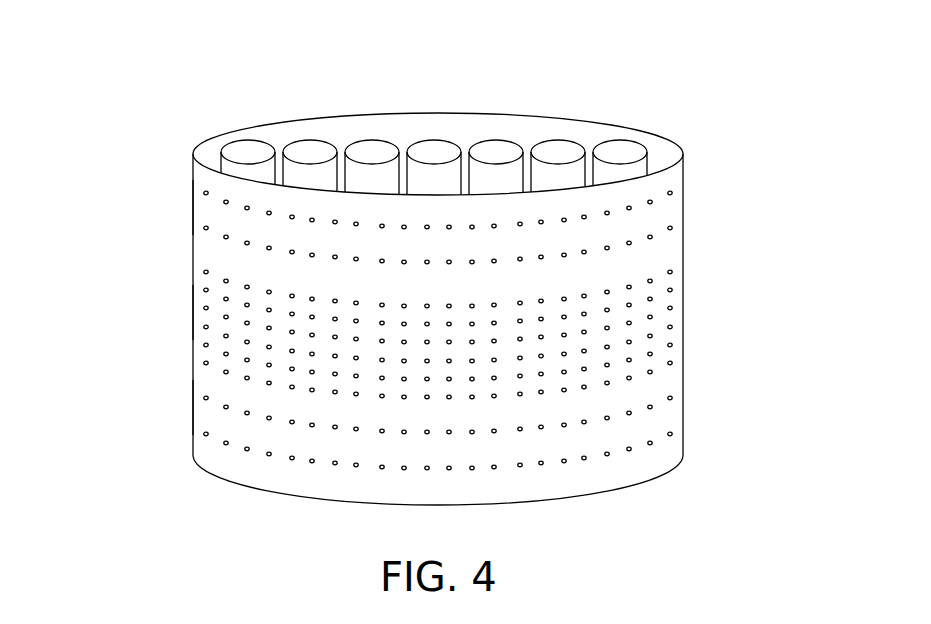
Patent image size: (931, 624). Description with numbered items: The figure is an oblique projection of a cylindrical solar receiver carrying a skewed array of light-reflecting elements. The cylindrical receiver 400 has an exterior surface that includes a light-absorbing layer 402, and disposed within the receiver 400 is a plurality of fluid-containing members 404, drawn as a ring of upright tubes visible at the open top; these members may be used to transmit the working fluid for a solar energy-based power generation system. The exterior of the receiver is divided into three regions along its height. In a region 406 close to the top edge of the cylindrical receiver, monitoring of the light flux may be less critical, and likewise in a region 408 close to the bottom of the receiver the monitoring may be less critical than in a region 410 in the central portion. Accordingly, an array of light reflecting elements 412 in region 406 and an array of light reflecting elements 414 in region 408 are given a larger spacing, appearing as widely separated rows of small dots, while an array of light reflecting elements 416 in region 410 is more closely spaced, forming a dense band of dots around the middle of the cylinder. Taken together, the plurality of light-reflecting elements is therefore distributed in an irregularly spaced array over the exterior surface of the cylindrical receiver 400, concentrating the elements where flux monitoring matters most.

The cylindrical receiver 400 is at (127, 82).
The light-absorbing layer 402 is at (588, 483).
The fluid-containing members 404 is at (438, 152).
The region close to the top edge 406 is at (163, 207).
The region close to the bottom 408 is at (163, 408).
The region in the central portion 410 is at (163, 313).
The array of light reflecting elements 412 is at (672, 229).
The array of light reflecting elements 414 is at (672, 398).
The array of light reflecting elements 416 is at (672, 328).